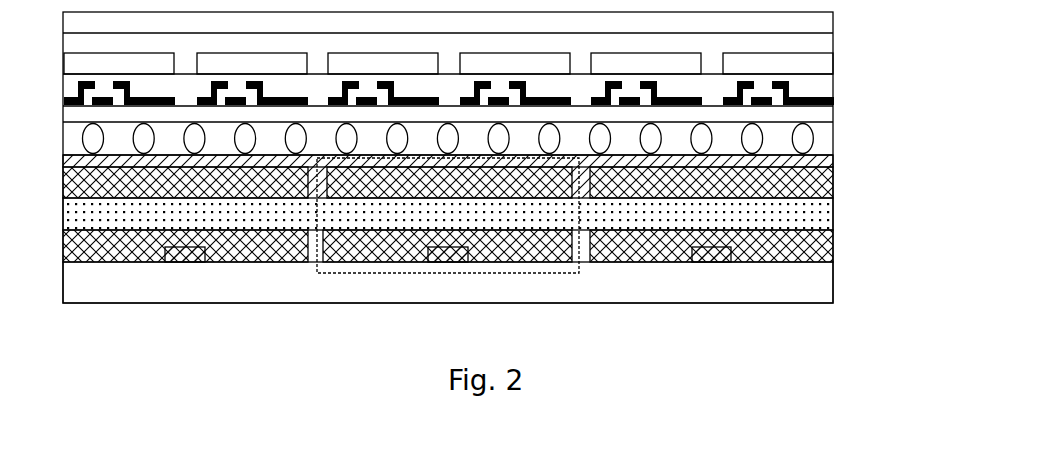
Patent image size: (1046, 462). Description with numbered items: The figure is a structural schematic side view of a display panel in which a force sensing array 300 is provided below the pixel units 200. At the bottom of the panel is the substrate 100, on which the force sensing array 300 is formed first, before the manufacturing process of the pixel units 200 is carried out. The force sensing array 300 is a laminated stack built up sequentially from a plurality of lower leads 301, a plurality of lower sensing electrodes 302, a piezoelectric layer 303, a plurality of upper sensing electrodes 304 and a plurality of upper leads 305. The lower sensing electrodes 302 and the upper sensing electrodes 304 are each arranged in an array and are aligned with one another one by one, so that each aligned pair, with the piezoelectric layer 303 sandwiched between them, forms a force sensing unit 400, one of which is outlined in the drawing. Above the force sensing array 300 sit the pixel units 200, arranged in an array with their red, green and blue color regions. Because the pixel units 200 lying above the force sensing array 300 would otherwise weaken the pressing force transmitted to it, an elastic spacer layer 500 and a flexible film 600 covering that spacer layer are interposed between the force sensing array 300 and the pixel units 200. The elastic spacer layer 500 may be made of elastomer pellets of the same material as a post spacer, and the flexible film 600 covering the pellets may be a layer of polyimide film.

The substrate 100 is at (813, 282).
The pixel units 200 is at (835, 12).
The force sensing array 300 is at (502, 209).
The lower leads 301 is at (720, 256).
The lower sensing electrodes 302 is at (833, 238).
The piezoelectric layer 303 is at (813, 216).
The upper sensing electrodes 304 is at (813, 190).
The upper leads 305 is at (833, 162).
The force sensing unit 400 is at (489, 227).
The elastic spacer layer 500 is at (813, 136).
The flexible film 600 is at (813, 113).